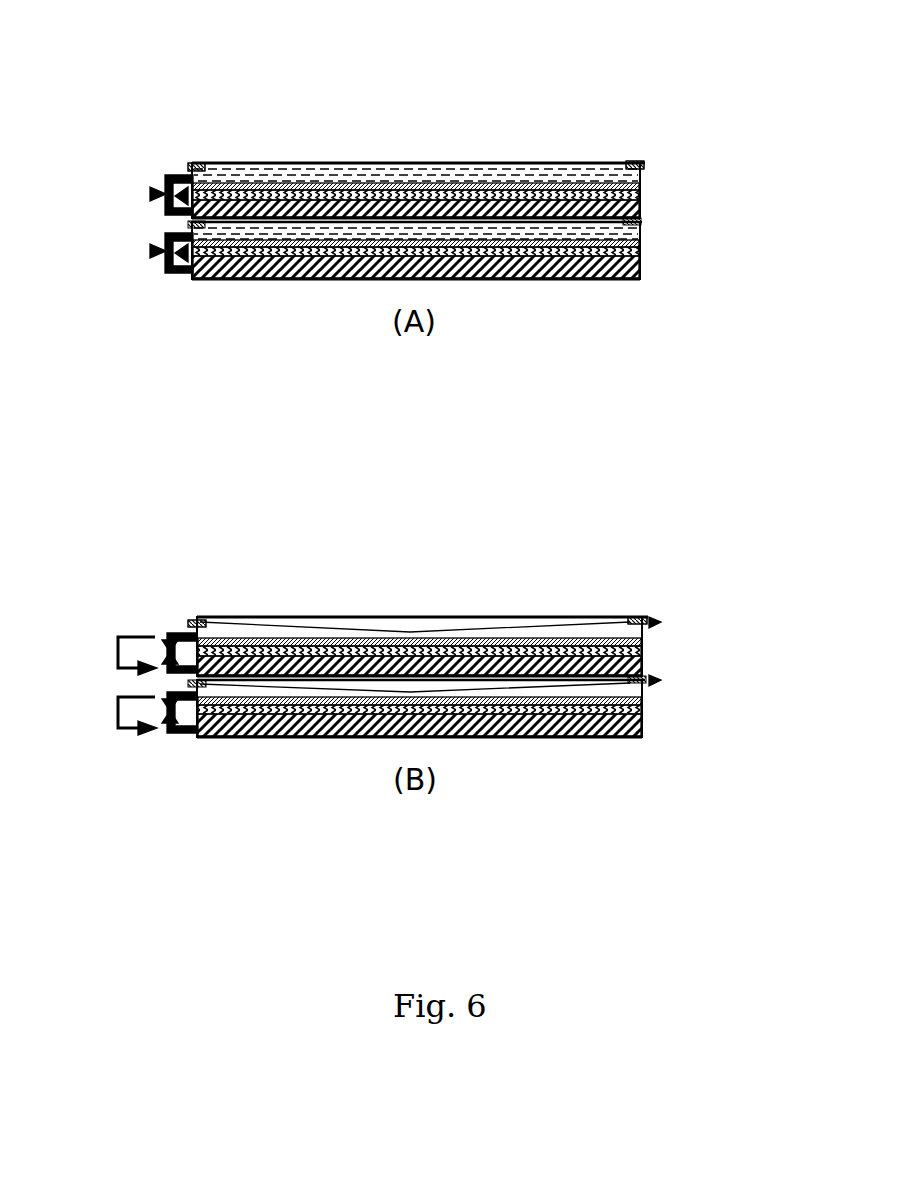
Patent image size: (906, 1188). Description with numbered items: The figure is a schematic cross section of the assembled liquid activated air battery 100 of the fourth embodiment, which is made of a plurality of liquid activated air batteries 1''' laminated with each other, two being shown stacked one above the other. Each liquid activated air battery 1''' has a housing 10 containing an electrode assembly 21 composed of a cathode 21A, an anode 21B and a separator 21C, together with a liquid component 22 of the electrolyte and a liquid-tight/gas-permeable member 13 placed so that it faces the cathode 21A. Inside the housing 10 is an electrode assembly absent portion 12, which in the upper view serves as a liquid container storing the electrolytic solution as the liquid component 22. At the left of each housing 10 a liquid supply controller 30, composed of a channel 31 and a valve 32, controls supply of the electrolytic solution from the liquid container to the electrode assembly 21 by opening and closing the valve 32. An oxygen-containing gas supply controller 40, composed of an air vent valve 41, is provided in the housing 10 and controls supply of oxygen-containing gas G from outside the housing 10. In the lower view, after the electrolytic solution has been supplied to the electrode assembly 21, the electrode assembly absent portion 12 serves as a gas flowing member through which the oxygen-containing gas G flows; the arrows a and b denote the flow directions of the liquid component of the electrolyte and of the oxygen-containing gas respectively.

The assembled liquid activated air battery 100 is at (414, 128).
The liquid activated air battery 1''' is at (338, 361).
The housing 10 is at (640, 240).
The electrode assembly absent portion 12 is at (593, 188).
The liquid-tight/gas-permeable member 13 is at (640, 172).
The electrode assembly 21 is at (756, 168).
The cathode 21A is at (640, 183).
The anode 21B is at (640, 205).
The separator 21C is at (640, 192).
The liquid component of electrolyte 22 is at (490, 240).
The liquid supply controller 30 is at (106, 160).
The channel 31 is at (168, 176).
The valve 32 is at (152, 194).
The oxygen-containing gas supply controller 40 is at (197, 165).
The air vent valve 41 is at (417, 394).
The flow direction of liquid component of electrolyte a is at (118, 655).
The flow direction of oxygen-containing gas b is at (300, 684).
The oxygen-containing gas G is at (487, 683).